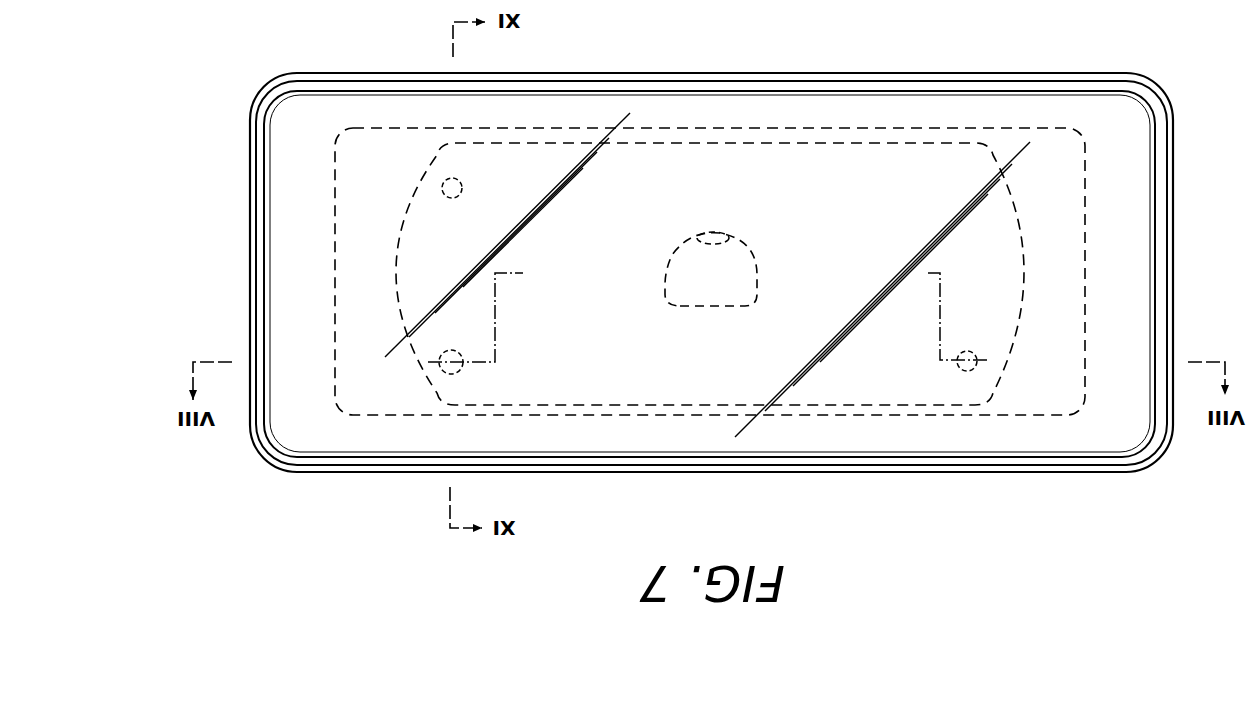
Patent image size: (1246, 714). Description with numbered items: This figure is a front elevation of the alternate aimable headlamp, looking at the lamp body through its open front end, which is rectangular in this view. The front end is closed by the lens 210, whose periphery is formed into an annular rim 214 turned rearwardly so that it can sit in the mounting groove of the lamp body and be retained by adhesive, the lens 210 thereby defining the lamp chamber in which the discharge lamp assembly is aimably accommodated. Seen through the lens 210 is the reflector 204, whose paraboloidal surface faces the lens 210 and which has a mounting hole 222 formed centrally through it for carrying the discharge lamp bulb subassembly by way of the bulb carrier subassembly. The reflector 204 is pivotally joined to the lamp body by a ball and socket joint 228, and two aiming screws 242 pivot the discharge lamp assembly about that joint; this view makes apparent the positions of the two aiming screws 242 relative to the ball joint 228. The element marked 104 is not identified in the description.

The housing assembly 104 is at (250, 492).
The reflector 204 is at (835, 418).
The lens 210 is at (800, 105).
The annular rim 214 is at (265, 232).
The mounting hole 222 is at (690, 238).
The ball and socket joint 228 is at (440, 365).
The aiming screws 242 is at (452, 198).